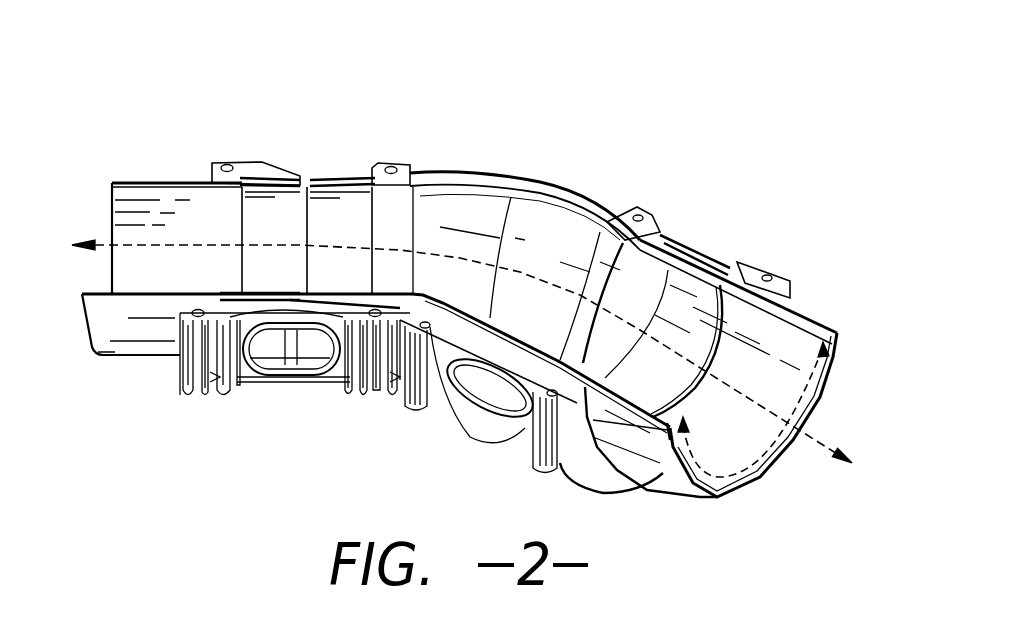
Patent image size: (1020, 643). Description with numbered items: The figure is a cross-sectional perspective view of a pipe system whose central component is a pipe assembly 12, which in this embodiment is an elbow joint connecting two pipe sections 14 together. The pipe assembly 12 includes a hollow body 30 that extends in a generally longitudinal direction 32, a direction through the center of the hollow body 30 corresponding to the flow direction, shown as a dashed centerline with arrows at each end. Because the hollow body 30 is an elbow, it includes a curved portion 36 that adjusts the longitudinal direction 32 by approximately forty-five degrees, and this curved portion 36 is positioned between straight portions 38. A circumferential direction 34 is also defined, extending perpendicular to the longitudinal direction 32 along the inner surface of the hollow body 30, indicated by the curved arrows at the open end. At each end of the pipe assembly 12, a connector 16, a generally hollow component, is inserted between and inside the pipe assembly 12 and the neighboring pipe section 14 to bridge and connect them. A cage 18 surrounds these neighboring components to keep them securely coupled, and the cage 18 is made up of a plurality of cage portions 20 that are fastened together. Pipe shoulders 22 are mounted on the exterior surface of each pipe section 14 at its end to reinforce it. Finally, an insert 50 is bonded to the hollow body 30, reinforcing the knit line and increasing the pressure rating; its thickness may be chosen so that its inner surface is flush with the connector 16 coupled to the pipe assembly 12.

The pipe assembly 12 is at (461, 269).
The pipe section 14 is at (469, 304).
The connector 16 is at (474, 247).
The cage 18 is at (288, 245).
The cage portion 20 is at (511, 194).
The pipe shoulder 22 is at (490, 198).
The hollow body 30 is at (553, 220).
The longitudinal direction 32 is at (849, 432).
The circumferential direction 34 is at (753, 442).
The curved portion 36 is at (568, 245).
The straight portion 38 is at (513, 239).
The insert 50 is at (484, 396).